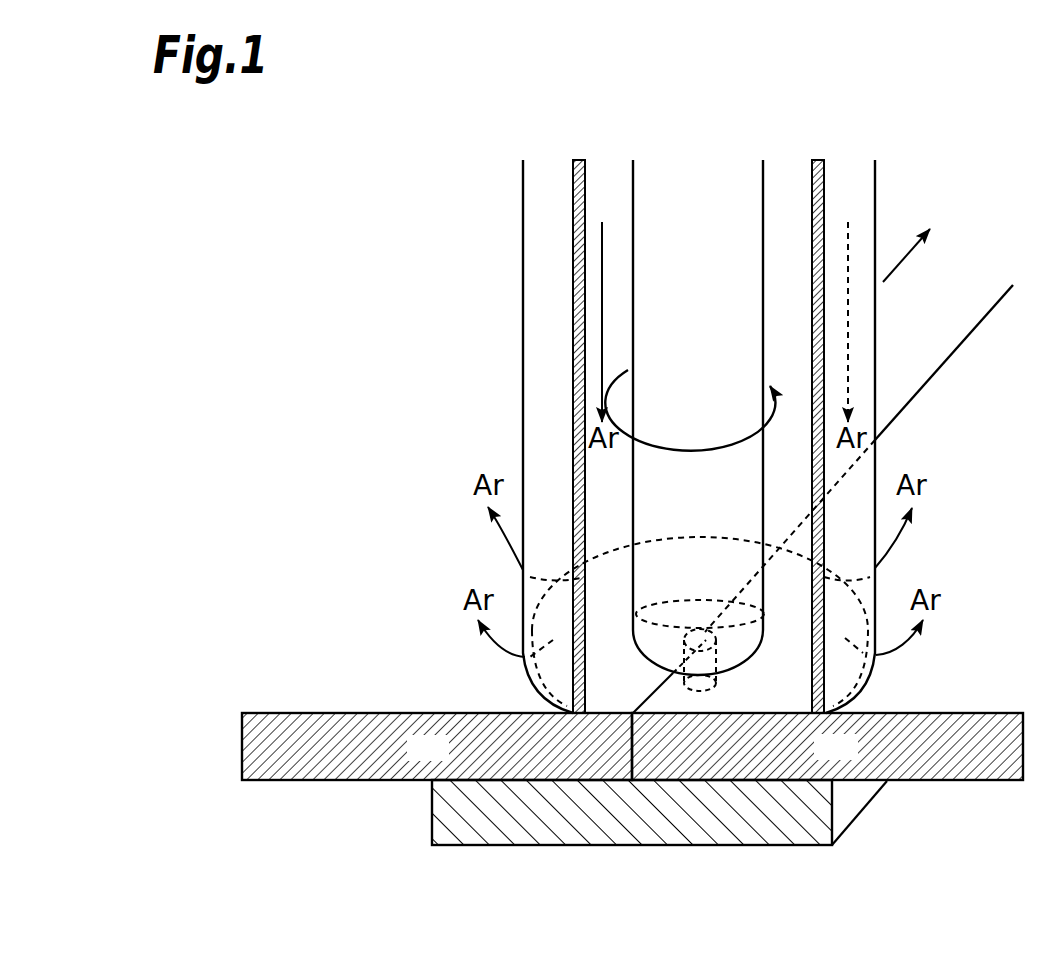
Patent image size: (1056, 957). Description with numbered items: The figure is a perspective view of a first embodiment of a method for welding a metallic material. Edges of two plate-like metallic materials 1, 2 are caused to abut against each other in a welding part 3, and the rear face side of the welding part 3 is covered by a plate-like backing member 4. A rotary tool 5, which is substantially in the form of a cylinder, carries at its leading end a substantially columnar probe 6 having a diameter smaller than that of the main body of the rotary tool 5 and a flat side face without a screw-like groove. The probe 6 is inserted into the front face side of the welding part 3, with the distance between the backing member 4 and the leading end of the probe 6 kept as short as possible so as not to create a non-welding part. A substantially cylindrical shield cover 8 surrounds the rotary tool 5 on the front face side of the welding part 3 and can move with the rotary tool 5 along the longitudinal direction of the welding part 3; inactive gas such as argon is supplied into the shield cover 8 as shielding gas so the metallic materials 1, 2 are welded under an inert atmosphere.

The metallic material 1 is at (312, 713).
The metallic material 2 is at (973, 728).
The welding part 3 is at (947, 345).
The backing member 4 is at (789, 835).
The rotary tool 5 is at (735, 275).
The probe 6 is at (700, 630).
The shield cover 8 is at (523, 262).